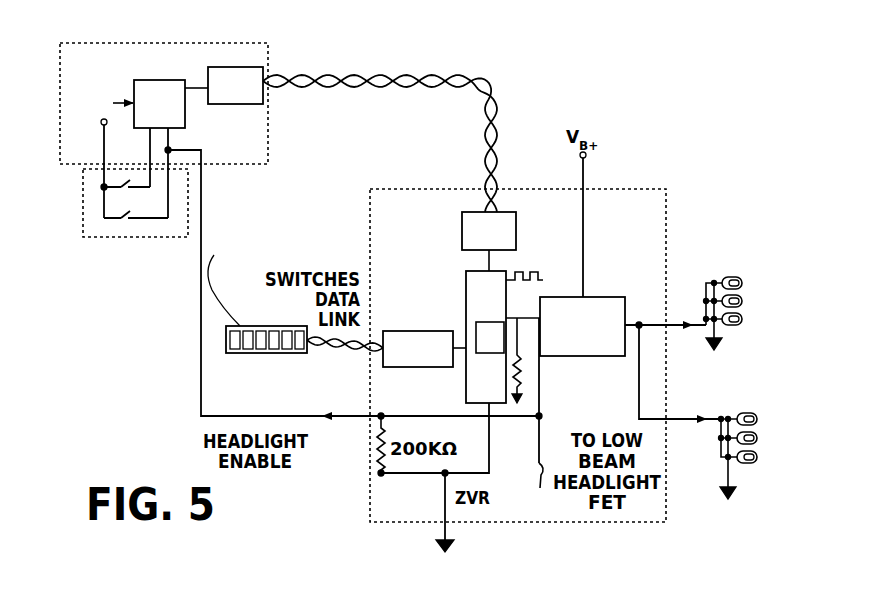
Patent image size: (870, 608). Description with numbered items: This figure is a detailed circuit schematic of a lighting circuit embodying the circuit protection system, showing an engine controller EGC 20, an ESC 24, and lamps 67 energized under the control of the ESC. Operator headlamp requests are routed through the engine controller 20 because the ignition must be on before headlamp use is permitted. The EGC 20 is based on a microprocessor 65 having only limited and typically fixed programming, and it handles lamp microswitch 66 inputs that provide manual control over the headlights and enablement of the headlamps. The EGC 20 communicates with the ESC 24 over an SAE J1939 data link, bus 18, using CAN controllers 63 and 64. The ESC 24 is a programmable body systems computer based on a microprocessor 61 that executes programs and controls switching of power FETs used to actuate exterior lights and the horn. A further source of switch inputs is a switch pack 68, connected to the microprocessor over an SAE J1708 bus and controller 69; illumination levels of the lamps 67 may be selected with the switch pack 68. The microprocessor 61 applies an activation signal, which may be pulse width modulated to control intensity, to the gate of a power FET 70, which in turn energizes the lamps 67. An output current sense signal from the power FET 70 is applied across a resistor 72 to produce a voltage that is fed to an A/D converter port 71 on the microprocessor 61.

The SAE J1939 data link bus 18 is at (495, 100).
The engine controller EGC 20 is at (270, 46).
The ESC 24 is at (666, 189).
The microprocessor 61 is at (506, 275).
The CAN controller 63 is at (262, 104).
The CAN controller 64 is at (516, 222).
The microprocessor 65 is at (188, 128).
The lamp microswitch 66 is at (83, 232).
The lamps 67 is at (745, 314).
The switch pack 68 is at (228, 353).
The controller 69 is at (413, 367).
The power FET 70 is at (618, 297).
The A/D converter port 71 is at (476, 335).
The resistor 72 is at (522, 373).